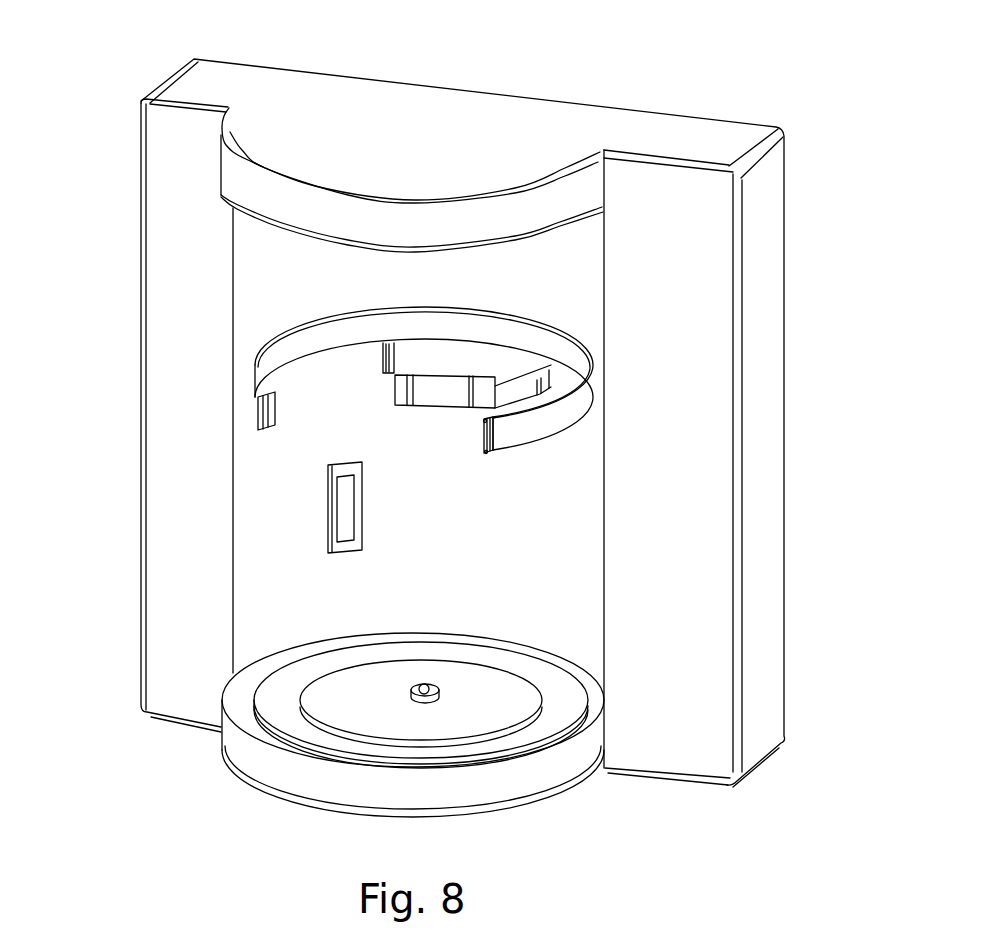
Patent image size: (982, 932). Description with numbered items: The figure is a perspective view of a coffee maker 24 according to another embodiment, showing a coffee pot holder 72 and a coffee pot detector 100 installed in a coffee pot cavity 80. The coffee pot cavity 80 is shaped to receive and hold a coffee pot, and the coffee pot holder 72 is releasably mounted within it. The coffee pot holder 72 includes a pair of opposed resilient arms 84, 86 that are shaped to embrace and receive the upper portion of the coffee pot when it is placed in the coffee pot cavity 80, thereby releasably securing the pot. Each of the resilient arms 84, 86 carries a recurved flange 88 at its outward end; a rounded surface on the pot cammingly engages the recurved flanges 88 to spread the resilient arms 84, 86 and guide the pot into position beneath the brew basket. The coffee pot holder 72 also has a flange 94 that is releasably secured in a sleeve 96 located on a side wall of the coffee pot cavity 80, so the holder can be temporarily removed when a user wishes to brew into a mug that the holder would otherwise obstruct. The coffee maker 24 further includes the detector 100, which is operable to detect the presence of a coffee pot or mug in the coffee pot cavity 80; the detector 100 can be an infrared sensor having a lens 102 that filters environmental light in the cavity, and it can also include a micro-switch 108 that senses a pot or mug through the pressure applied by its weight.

The coffee maker 24 is at (145, 52).
The coffee pot holder 72 is at (578, 403).
The coffee pot cavity 80 is at (262, 247).
The resilient arm 84 is at (267, 341).
The resilient arm 86 is at (533, 427).
The recurved flange 88 is at (260, 415).
The flange 94 is at (408, 358).
The sleeve 96 is at (480, 392).
The detector 100 is at (332, 552).
The lens 102 is at (348, 522).
The micro-switch 108 is at (410, 690).